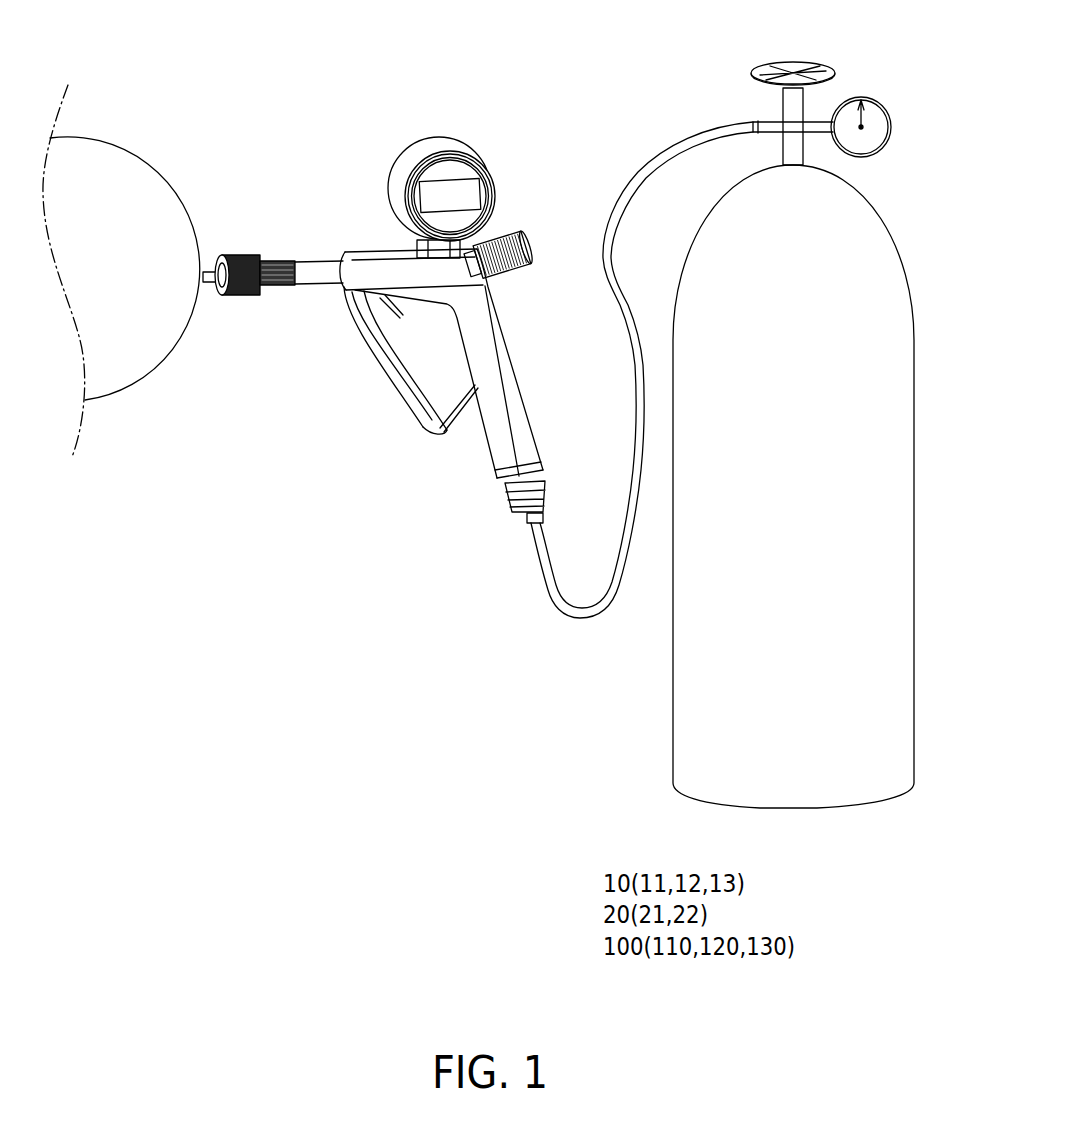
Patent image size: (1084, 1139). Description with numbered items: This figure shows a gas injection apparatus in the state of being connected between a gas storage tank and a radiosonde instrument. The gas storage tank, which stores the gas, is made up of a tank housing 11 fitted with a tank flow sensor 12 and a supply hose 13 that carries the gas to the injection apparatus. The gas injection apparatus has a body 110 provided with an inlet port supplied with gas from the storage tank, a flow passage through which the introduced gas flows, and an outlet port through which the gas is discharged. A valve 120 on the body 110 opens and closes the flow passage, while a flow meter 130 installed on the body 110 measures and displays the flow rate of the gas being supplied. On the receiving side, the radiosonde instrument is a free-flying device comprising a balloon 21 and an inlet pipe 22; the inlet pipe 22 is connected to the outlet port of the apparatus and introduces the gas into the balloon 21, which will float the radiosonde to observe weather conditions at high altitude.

The tank housing 11 is at (867, 225).
The tank flow sensor 12 is at (860, 98).
The supply hose 13 is at (682, 135).
The balloon 21 is at (121, 167).
The inlet pipe 22 is at (207, 264).
The body 110 is at (507, 377).
The valve 120 is at (390, 315).
The flow meter 130 is at (438, 137).